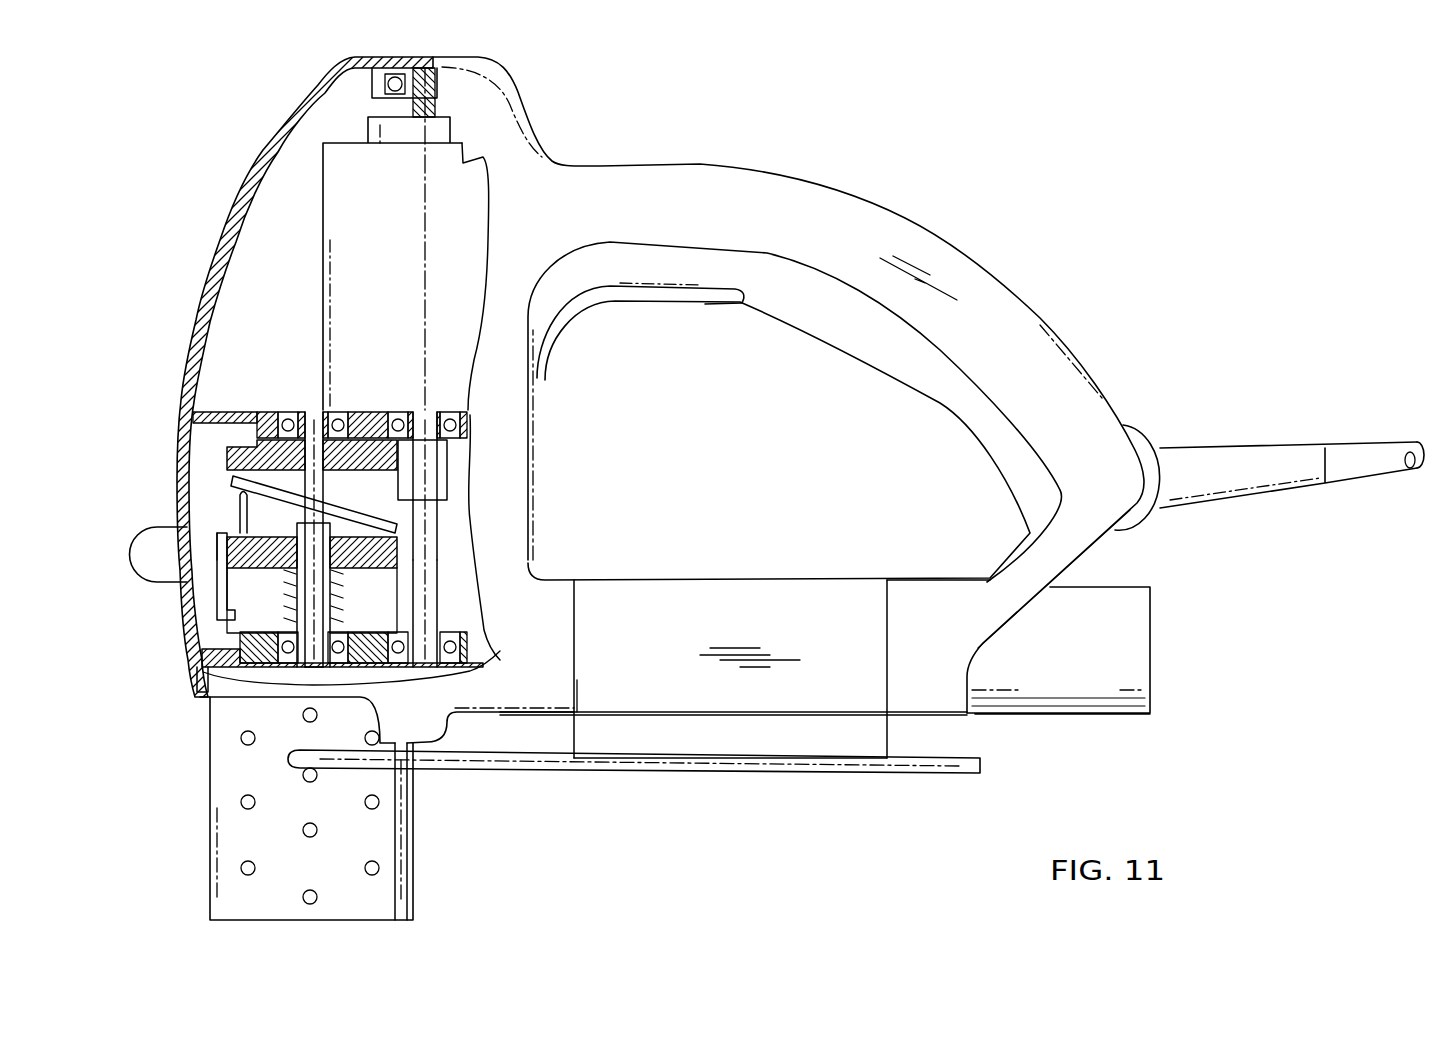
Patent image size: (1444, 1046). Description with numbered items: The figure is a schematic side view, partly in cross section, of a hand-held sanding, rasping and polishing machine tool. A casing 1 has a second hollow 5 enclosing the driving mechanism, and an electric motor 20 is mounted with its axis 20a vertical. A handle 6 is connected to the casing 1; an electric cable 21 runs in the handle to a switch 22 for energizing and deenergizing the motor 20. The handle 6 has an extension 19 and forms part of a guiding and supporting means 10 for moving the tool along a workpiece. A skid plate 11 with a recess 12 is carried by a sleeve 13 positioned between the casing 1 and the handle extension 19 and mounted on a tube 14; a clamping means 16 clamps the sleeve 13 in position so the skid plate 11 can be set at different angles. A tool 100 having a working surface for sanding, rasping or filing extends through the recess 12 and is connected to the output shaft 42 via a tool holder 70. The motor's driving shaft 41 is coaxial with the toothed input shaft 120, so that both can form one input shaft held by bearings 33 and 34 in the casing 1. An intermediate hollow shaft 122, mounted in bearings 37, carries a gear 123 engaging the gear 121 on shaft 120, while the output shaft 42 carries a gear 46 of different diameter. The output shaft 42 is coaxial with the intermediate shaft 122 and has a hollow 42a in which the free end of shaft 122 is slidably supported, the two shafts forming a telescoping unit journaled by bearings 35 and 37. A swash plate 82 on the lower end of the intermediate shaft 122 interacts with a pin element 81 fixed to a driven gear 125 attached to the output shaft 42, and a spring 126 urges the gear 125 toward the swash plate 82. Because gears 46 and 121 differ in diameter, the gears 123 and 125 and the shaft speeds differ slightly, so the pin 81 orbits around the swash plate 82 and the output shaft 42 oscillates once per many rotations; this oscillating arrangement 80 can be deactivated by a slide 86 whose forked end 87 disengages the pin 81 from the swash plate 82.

The casing 1 is at (539, 439).
The second hollow 5 is at (167, 400).
The handle 6 is at (235, 263).
The guiding and supporting means 10 is at (806, 787).
The skid plate 11 is at (587, 763).
The recess 12 is at (362, 760).
The sleeve 13 is at (740, 590).
The tube 14 is at (578, 678).
The clamping means 16 is at (1050, 690).
The handle extension 19 is at (947, 598).
The electric motor 20 is at (340, 165).
The motor axis 20a is at (425, 185).
The electric cable 21 is at (1340, 455).
The switch 22 is at (705, 300).
The bearing 33 is at (460, 660).
The bearing 34 is at (398, 410).
The bearing 35 is at (291, 662).
The bearing 37 is at (285, 405).
The driving shaft 41 is at (415, 410).
The output shaft 42 is at (316, 668).
The hollow 42a is at (340, 595).
The gear 46 is at (449, 452).
The tool holder 70 is at (305, 667).
The oscillating arrangement 80 is at (180, 647).
The pin element 81 is at (240, 510).
The swash plate 82 is at (232, 481).
The slide 86 is at (157, 567).
The forked end 87 is at (188, 667).
The tool 100 is at (398, 884).
The toothed input shaft 120 is at (450, 545).
The teeth 121 is at (445, 502).
The intermediate hollow shaft 122 is at (298, 408).
The gear 123 is at (245, 450).
The driven gear 125 is at (235, 553).
The spring 126 is at (290, 583).